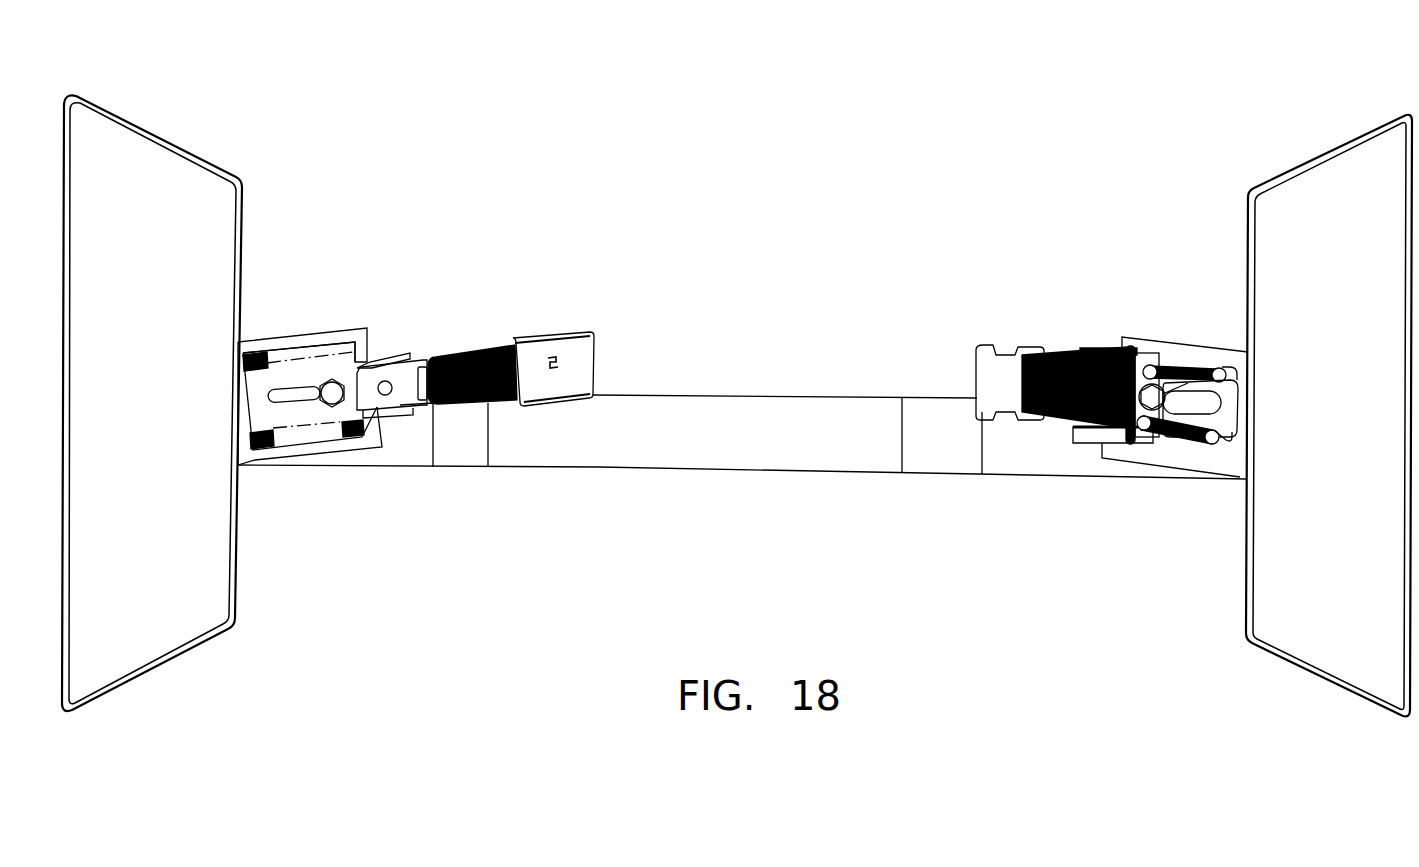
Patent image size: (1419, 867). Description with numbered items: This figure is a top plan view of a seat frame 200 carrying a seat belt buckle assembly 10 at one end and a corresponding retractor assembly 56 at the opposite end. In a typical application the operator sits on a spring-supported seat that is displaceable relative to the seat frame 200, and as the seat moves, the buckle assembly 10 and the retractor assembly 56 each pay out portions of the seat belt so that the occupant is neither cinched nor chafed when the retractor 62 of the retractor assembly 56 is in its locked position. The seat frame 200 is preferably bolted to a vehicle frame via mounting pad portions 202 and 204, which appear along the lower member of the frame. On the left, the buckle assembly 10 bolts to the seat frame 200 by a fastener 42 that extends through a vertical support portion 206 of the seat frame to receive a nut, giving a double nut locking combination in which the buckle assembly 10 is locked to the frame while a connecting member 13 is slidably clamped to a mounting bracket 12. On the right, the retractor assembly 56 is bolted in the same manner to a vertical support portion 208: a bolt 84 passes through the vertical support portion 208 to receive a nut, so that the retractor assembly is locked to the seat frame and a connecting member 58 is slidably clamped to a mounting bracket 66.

The seat frame 200 is at (1311, 142).
The vertical support portion 206 is at (260, 335).
The connecting member 13 is at (363, 368).
The mounting bracket 12 is at (407, 353).
The seat belt buckle assembly 10 is at (443, 353).
The fastener 42 is at (337, 407).
The mounting pad portion 202 is at (458, 470).
The mounting pad portion 204 is at (953, 475).
The retractor assembly 56 is at (1048, 417).
The vertical support portion 208 is at (1152, 337).
The bolt 84 is at (1200, 365).
The mounting bracket 66 is at (1228, 377).
The connecting member 58 is at (1239, 426).
The retractor 62 is at (1087, 445).